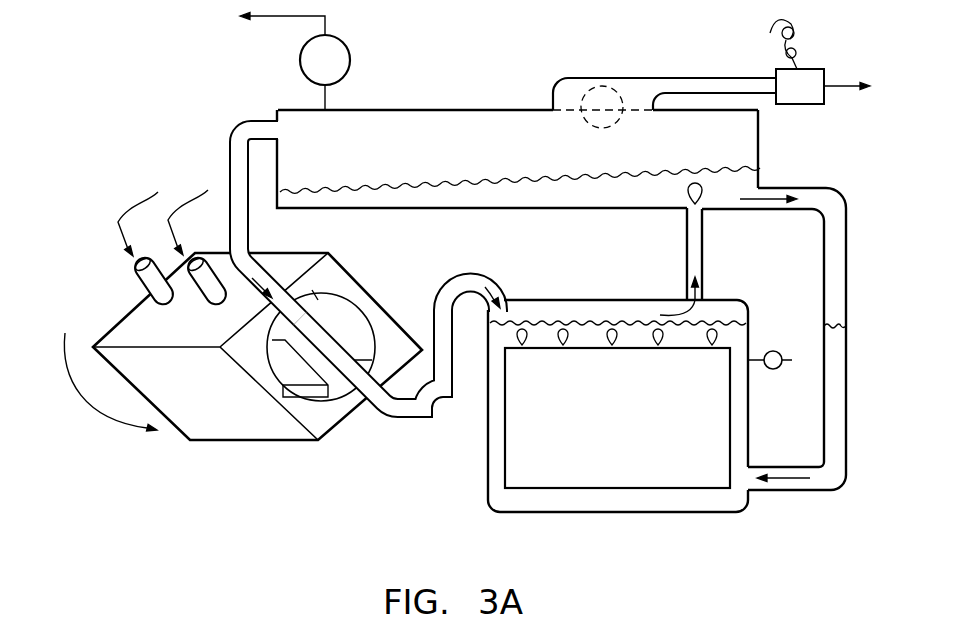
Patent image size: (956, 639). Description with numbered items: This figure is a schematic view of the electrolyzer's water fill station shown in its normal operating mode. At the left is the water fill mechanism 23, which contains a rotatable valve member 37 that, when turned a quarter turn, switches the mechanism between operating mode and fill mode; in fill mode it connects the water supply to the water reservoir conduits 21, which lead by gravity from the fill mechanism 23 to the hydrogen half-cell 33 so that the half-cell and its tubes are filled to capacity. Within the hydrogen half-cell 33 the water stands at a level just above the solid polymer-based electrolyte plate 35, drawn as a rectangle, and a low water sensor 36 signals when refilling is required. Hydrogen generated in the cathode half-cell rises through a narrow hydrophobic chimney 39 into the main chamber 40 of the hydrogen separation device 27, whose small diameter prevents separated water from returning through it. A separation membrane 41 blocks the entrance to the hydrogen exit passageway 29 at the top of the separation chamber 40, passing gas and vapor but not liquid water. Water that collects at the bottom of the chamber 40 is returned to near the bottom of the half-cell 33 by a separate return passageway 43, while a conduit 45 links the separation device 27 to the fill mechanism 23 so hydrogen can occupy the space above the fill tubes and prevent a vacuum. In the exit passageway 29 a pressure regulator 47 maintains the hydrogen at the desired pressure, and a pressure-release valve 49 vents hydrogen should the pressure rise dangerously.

The water reservoir conduits 21 is at (389, 422).
The water fill mechanism 23 is at (135, 325).
The hydrogen separation device 27 is at (422, 110).
The hydrogen exit passageway 29 is at (703, 78).
The hydrogen half-cell 33 is at (563, 298).
The solid polymer-based electrolyte plate 35 is at (609, 424).
The low water sensor 36 is at (792, 360).
The rotatable valve member 37 is at (305, 302).
The chimney 39 is at (704, 255).
The main chamber of the separation device 40 is at (509, 162).
The separation membrane 41 is at (594, 76).
The return passageway 43 is at (848, 210).
The conduit 45 is at (230, 158).
The pressure regulator 47 is at (817, 68).
The pressure-release valve 49 is at (300, 58).